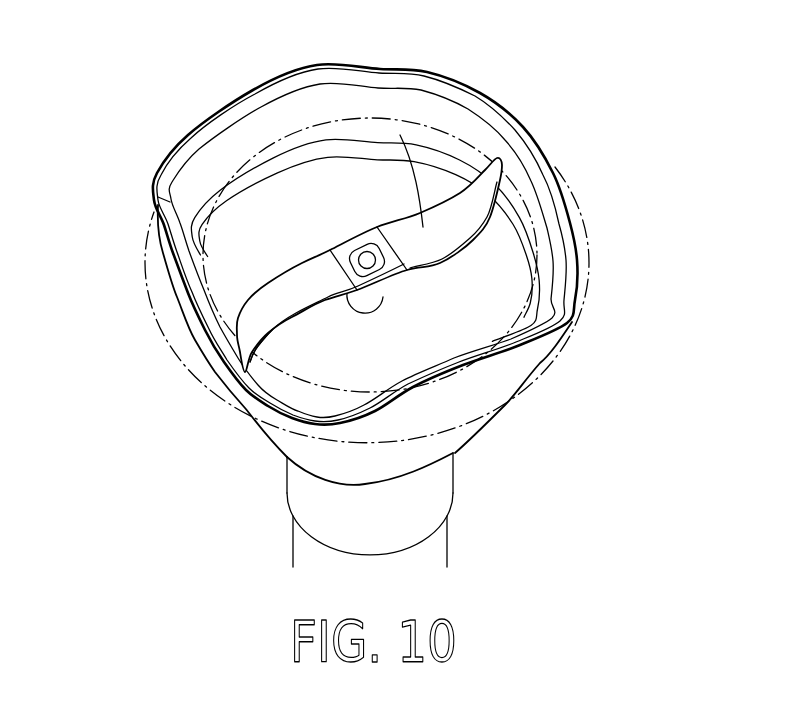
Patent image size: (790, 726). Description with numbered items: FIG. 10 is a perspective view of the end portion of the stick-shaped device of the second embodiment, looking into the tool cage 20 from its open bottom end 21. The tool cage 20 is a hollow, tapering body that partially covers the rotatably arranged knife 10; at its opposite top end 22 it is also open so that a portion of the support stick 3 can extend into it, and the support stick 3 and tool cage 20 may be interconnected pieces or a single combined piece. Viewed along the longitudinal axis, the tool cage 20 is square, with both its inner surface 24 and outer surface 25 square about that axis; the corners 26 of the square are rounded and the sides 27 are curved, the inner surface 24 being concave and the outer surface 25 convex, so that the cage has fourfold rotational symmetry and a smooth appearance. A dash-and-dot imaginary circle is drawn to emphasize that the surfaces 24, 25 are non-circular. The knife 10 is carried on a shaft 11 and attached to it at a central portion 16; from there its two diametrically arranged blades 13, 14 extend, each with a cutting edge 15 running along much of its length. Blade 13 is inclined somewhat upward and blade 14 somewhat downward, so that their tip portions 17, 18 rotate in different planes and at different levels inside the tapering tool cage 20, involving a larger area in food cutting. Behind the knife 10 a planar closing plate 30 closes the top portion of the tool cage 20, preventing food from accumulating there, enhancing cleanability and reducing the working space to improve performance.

The support stick 3 is at (433, 552).
The knife 10 is at (400, 135).
The shaft 11 is at (380, 302).
The blade 13 is at (458, 222).
The blade 14 is at (287, 283).
The cutting edge 15 is at (300, 317).
The central portion 16 is at (357, 240).
The tip portion 17 is at (493, 160).
The tip portion 18 is at (240, 345).
The tool cage 20 is at (497, 380).
The bottom end 21 is at (146, 145).
The top end 22 is at (254, 475).
The inner surface 24 is at (270, 123).
The outer surface 25 is at (236, 390).
The corners 26 is at (158, 197).
The sides 27 is at (557, 203).
The closing plate 30 is at (280, 222).